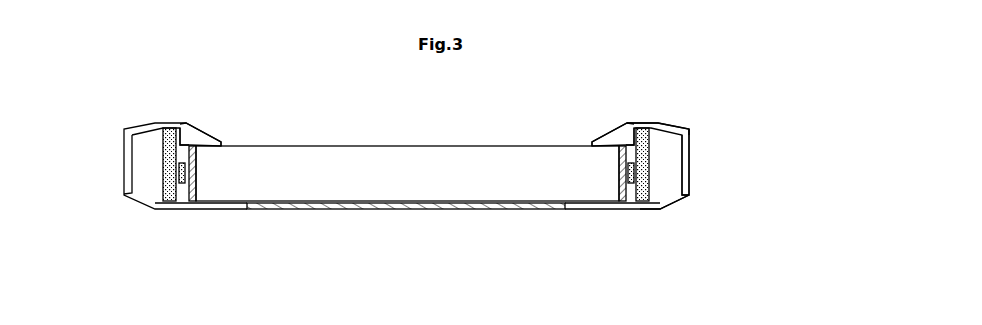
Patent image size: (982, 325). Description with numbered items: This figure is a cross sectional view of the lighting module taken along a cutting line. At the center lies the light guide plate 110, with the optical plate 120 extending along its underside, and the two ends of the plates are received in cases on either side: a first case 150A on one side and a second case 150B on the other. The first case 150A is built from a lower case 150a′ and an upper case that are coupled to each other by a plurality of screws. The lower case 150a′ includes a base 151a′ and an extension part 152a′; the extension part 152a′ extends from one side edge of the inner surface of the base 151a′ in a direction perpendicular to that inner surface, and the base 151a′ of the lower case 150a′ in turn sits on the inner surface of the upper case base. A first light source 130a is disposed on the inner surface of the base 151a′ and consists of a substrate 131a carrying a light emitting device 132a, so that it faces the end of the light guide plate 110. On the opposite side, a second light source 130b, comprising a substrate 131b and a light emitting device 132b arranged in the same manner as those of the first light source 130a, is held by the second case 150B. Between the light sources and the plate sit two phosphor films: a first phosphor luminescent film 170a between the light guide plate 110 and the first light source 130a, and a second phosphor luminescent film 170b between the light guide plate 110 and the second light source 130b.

The light guide plate 110 is at (401, 160).
The optical plate 120 is at (403, 212).
The first light source 130a is at (640, 202).
The second light source 130b is at (193, 208).
The substrate 131a is at (647, 201).
The substrate 131b is at (167, 201).
The light emitting device 132a is at (660, 254).
The light emitting device 132b is at (193, 201).
The first case 150A is at (712, 186).
The second case 150B is at (146, 206).
The lower case 150a′ is at (723, 206).
The base 151a′ is at (671, 200).
The extension part 152a′ is at (660, 209).
The first phosphor luminescent film 170a is at (623, 165).
The second phosphor luminescent film 170b is at (191, 160).